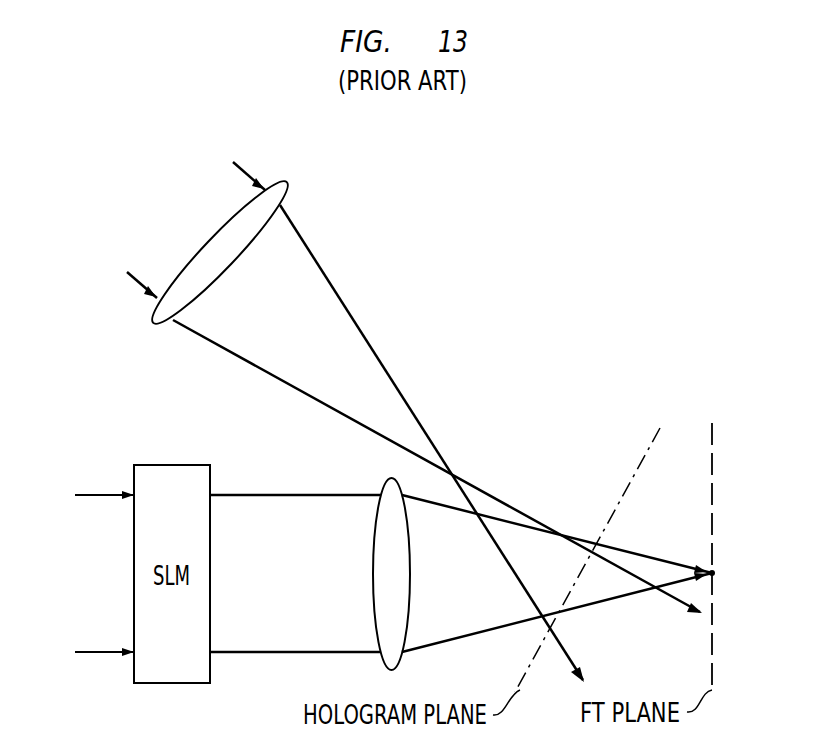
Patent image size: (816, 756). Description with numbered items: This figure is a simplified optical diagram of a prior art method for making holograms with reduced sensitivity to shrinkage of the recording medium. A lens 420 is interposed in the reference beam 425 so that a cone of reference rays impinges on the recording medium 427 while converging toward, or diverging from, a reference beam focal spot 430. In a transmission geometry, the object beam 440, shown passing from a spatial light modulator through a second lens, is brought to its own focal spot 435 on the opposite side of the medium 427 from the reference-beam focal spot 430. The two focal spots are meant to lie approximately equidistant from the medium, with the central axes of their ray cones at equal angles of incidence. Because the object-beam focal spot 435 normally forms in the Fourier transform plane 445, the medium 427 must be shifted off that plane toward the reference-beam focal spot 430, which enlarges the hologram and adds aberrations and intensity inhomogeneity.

The lens 420 is at (153, 322).
The reference beam 425 is at (145, 253).
The medium 427 is at (660, 428).
The reference beam focal spot 430 is at (450, 473).
The focal spot of object beam 435 is at (713, 573).
The object beam 440 is at (105, 623).
The Fourier transform plane 445 is at (713, 485).